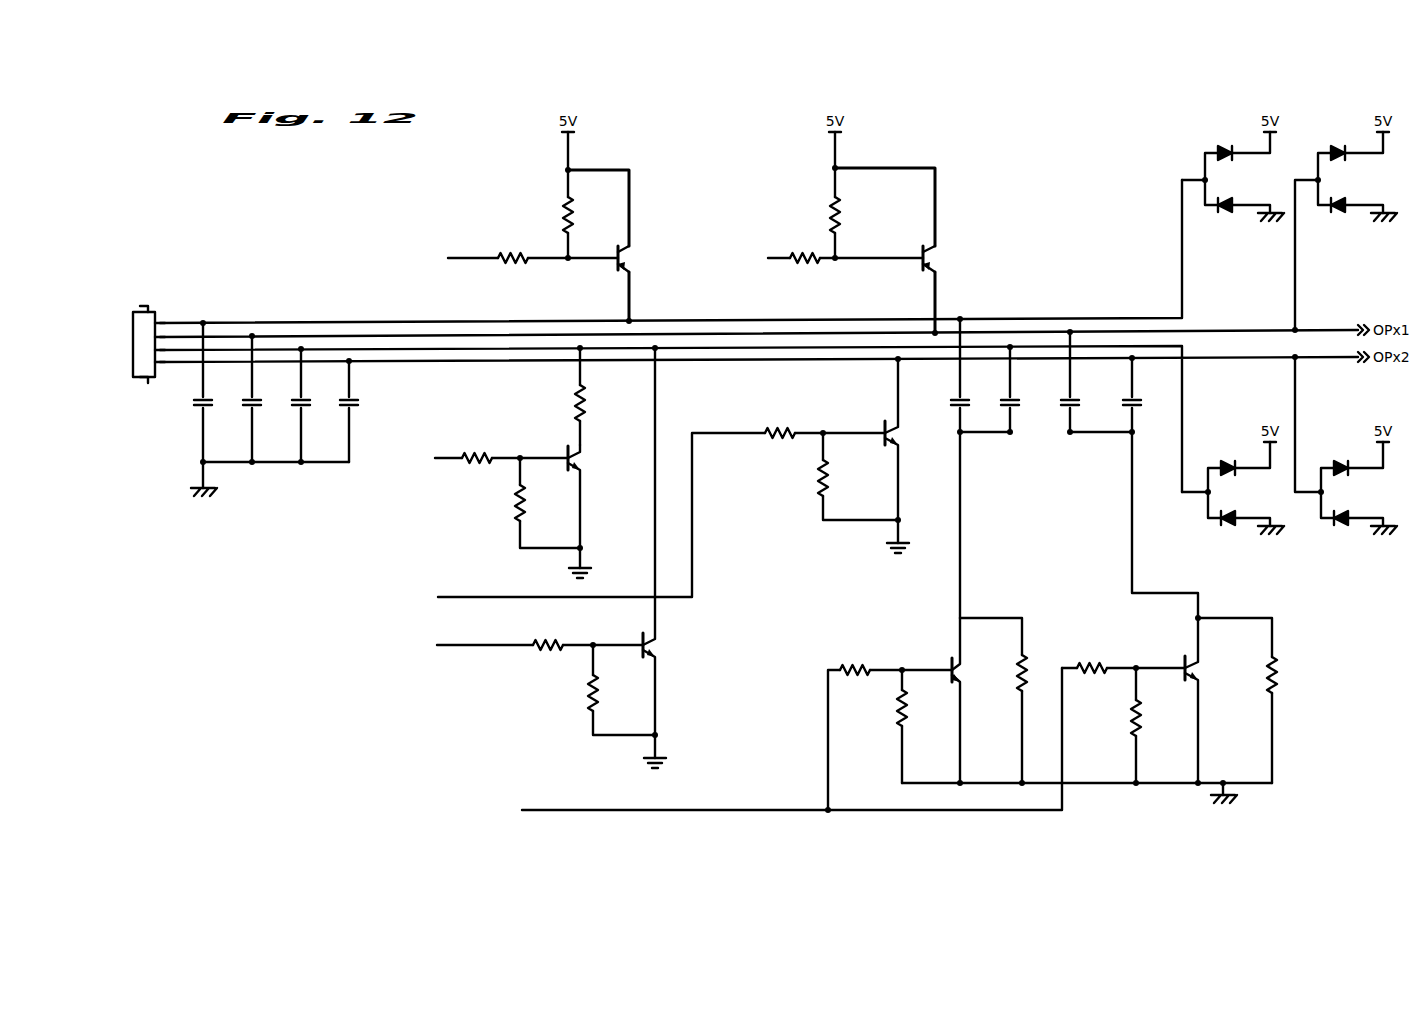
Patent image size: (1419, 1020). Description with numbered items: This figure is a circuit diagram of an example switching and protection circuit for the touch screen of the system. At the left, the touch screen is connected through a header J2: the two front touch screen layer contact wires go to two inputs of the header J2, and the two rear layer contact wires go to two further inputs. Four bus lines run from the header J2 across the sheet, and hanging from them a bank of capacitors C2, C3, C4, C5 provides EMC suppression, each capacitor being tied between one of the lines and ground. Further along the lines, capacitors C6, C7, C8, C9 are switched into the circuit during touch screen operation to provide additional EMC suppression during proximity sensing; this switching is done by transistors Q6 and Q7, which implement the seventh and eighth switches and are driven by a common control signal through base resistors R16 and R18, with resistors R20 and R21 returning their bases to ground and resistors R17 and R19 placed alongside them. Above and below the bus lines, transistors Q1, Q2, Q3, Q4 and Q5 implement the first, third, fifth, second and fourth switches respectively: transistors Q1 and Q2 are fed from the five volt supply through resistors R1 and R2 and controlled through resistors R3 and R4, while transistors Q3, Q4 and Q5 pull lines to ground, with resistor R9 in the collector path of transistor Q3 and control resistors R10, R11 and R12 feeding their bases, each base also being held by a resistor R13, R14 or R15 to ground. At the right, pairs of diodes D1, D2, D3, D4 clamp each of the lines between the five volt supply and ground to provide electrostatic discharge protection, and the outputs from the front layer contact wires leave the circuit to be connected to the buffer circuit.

The header J2 is at (133, 350).
The capacitor C2 is at (216, 408).
The capacitor C3 is at (266, 399).
The capacitor C4 is at (315, 405).
The capacitor C5 is at (364, 410).
The capacitor C6 is at (974, 467).
The capacitor C7 is at (1003, 389).
The capacitor C8 is at (1096, 382).
The capacitor C9 is at (1160, 486).
The resistor R1 is at (582, 185).
The resistor R2 is at (849, 185).
The resistor R3 is at (496, 260).
The resistor R4 is at (809, 260).
The resistor R9 is at (597, 395).
The resistor R10 is at (471, 464).
The resistor R11 is at (510, 649).
The resistor R12 is at (630, 505).
The resistor R13 is at (547, 503).
The resistor R14 is at (621, 690).
The resistor R15 is at (858, 476).
The resistor R16 is at (751, 730).
The resistor R17 is at (1009, 702).
The resistor R18 is at (1123, 670).
The resistor R19 is at (1252, 699).
The resistor R20 is at (917, 726).
The resistor R21 is at (1152, 727).
The transistor Q1 is at (629, 247).
The transistor Q2 is at (916, 252).
The transistor Q3 is at (605, 511).
The transistor Q4 is at (679, 556).
The transistor Q5 is at (923, 454).
The transistor Q6 is at (989, 702).
The transistor Q7 is at (1223, 710).
The diode D1 is at (1233, 183).
The diode D2 is at (1344, 223).
The diode D3 is at (1233, 494).
The diode D4 is at (1344, 459).